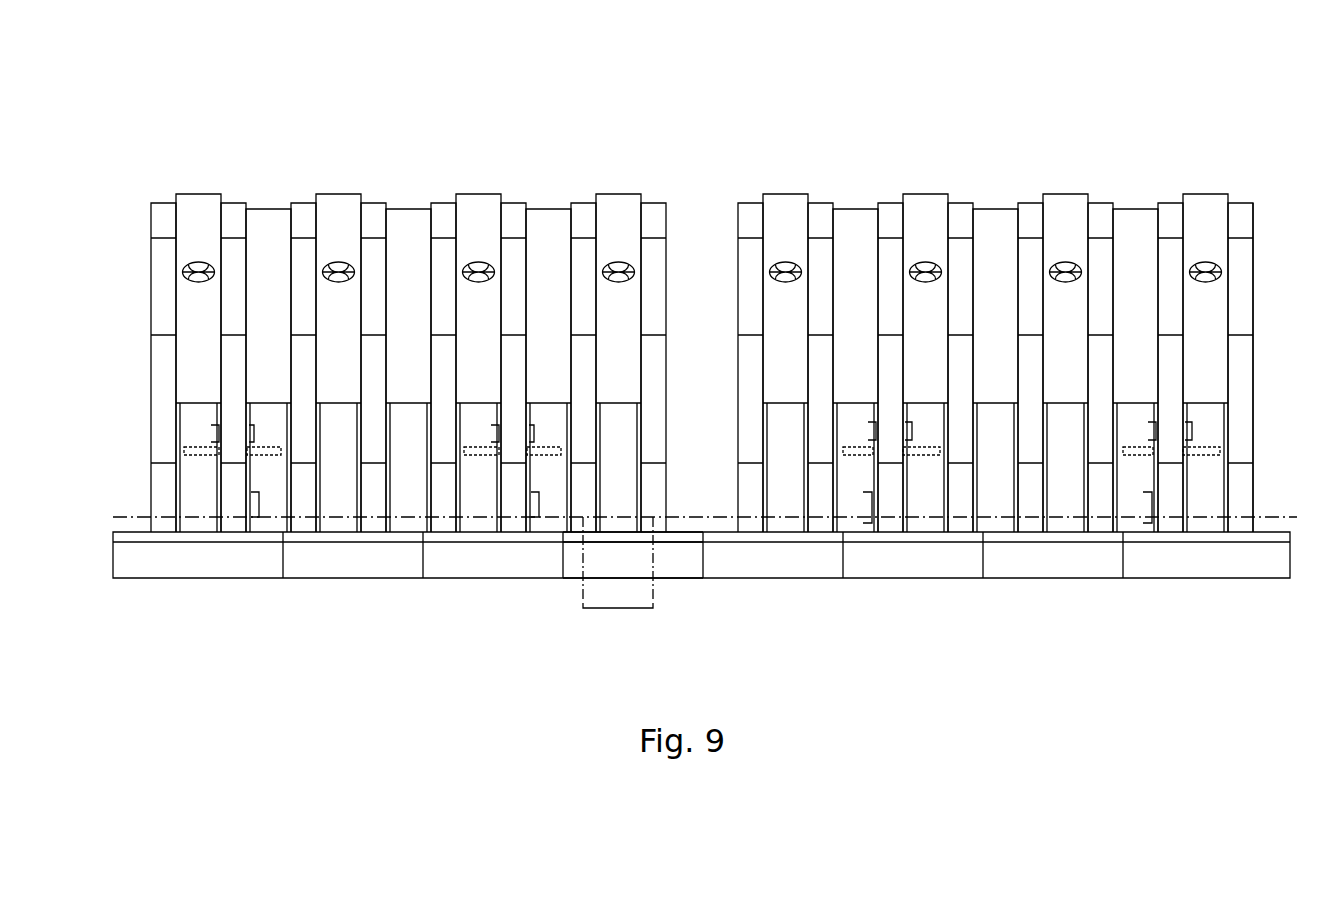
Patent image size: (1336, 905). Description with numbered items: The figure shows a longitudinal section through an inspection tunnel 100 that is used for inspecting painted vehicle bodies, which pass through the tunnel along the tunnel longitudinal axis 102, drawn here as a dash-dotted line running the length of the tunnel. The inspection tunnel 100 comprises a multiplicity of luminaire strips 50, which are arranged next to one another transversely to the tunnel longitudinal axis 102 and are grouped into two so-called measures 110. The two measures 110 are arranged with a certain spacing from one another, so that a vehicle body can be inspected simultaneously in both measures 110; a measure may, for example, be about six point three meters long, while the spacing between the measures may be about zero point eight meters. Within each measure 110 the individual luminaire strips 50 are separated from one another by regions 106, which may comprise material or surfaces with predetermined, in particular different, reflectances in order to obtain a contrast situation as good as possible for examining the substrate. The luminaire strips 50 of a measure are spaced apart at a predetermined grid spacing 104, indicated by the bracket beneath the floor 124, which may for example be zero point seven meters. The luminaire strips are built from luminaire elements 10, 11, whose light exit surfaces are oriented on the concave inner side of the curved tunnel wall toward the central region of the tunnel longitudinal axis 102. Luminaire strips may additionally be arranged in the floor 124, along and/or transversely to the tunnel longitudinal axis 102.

The inspection tunnel 100 is at (874, 85).
The measure 110 is at (372, 109).
The region 106 is at (196, 194).
The luminaire strip 50 is at (160, 203).
The luminaire element 11 is at (1254, 225).
The luminaire element 10 is at (1255, 497).
The tunnel longitudinal axis 102 is at (132, 517).
The floor 124 is at (688, 532).
The grid spacing 104 is at (618, 608).